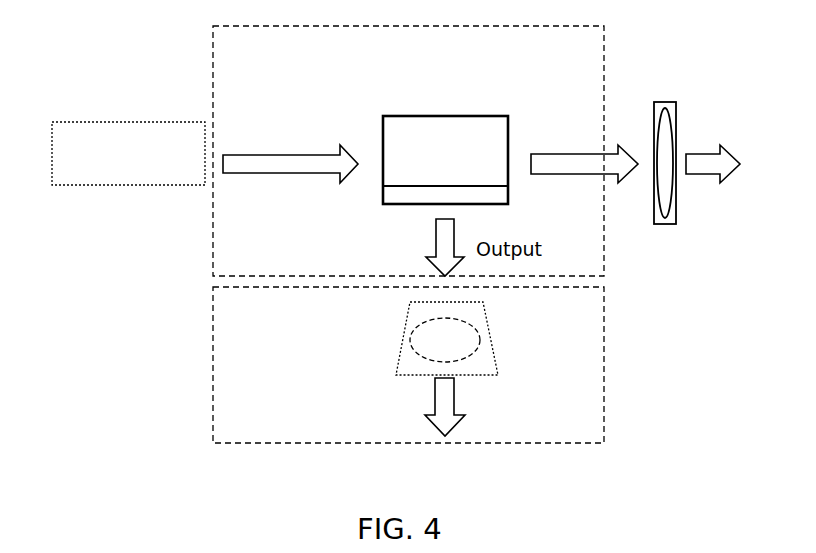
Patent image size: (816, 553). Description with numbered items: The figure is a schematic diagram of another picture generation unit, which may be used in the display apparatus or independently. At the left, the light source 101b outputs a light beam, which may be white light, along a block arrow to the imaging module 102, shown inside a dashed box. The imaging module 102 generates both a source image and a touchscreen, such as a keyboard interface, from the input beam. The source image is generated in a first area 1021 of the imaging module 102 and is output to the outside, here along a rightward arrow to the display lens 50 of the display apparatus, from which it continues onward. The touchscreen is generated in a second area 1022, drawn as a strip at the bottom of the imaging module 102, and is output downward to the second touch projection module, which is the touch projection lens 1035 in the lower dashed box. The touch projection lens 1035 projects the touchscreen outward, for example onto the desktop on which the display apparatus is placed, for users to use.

The light source 101b is at (128, 153).
The imaging module 102 is at (449, 151).
The first area 1021 is at (473, 140).
The second area 1022 is at (399, 195).
The display lens 50 is at (666, 97).
The touch projection lens 1035 is at (485, 362).